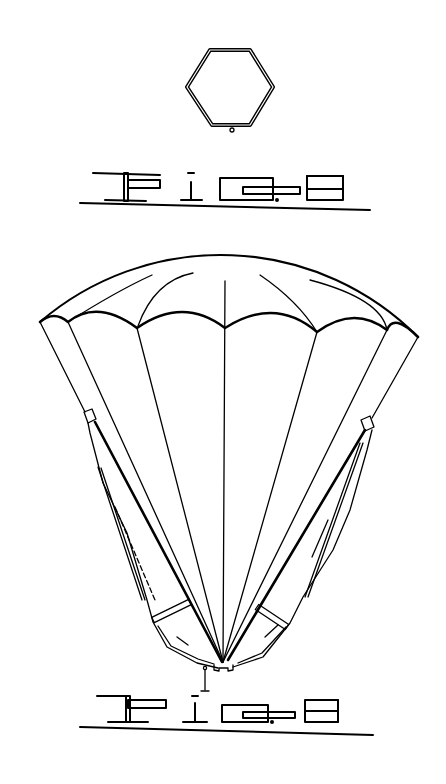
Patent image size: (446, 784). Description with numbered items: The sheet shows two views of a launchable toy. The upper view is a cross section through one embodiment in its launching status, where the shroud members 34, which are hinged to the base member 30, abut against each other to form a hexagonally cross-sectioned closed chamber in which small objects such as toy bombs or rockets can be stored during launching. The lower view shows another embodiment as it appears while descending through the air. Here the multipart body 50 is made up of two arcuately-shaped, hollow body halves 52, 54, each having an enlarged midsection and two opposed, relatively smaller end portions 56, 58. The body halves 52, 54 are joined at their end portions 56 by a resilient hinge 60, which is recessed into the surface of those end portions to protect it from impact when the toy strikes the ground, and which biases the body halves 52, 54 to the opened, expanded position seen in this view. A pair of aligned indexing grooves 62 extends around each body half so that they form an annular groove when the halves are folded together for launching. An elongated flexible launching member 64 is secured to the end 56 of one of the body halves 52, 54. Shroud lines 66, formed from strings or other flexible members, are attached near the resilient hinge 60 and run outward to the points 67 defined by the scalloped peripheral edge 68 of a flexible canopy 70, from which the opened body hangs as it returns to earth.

In FIG. 6, the base member 30 is at (239, 87).
In FIG. 6, the shroud member 34 is at (197, 110).
In FIG. 9, the multipart body 50 is at (348, 523).
In FIG. 9, the body half 52 is at (138, 572).
In FIG. 9, the body half 54 is at (303, 586).
In FIG. 9, the end portion 56 is at (197, 650).
In FIG. 9, the end portion 58 is at (85, 417).
In FIG. 9, the resilient hinge 60 is at (230, 672).
In FIG. 9, the indexing groove 62 is at (152, 614).
In FIG. 9, the elongated flexible launching member 64 is at (203, 678).
In FIG. 9, the shroud lines 66 is at (65, 371).
In FIG. 9, the points 67 is at (238, 322).
In FIG. 9, the scalloped peripheral edge 68 is at (176, 313).
In FIG. 9, the flexible canopy 70 is at (236, 277).